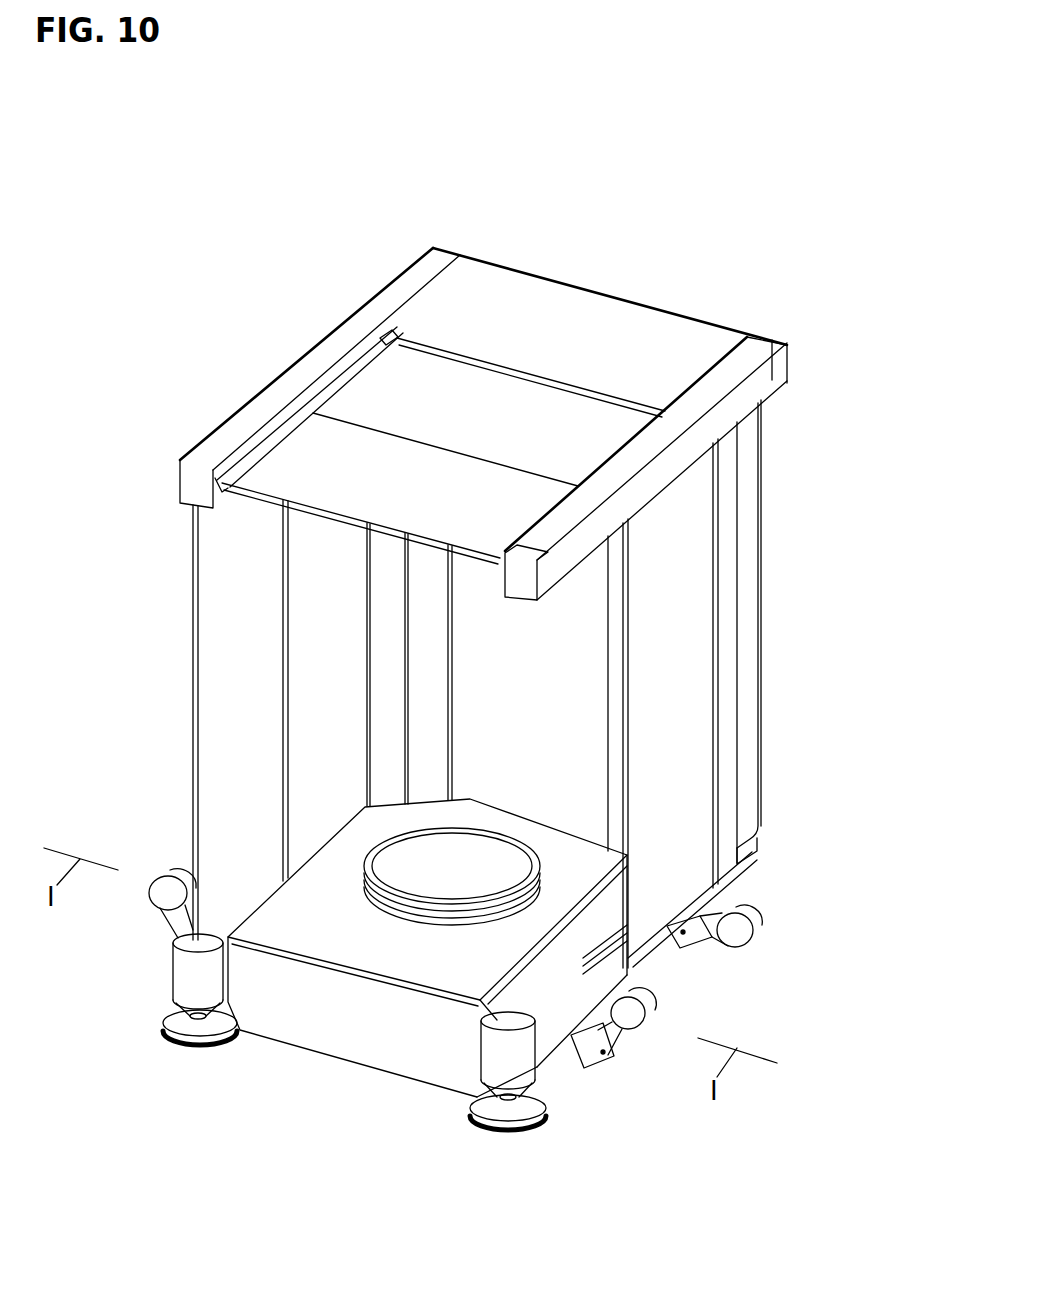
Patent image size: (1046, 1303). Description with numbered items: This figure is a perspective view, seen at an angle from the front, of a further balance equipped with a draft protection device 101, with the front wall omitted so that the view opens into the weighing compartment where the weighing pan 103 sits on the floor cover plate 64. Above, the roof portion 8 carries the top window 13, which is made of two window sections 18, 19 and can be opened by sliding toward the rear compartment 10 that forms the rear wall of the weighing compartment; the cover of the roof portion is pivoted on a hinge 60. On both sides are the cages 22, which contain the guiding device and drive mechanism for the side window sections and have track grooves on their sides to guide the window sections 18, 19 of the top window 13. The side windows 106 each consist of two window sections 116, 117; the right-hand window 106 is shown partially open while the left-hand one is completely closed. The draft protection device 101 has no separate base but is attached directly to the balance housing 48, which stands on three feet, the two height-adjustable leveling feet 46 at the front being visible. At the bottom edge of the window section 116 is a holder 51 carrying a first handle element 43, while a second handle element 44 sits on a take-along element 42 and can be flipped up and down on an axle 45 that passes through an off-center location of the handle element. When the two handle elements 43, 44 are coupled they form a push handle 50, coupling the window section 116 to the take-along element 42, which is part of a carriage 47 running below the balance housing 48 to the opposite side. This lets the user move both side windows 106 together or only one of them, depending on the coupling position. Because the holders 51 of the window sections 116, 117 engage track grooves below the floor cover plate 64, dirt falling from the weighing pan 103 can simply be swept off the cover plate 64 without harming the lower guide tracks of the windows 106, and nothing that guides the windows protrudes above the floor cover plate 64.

The draft protection device 101 is at (657, 281).
The cage 22 is at (432, 260).
The roof portion 8 is at (313, 325).
The hinge 60 is at (373, 331).
The window section 19 is at (495, 418).
The top window 13 is at (377, 418).
The window section 18 is at (420, 500).
The rear compartment 10 is at (765, 591).
The side window 106 is at (188, 664).
The window section 116 is at (261, 715).
The window section 117 is at (350, 686).
The floor cover plate 64 is at (342, 928).
The weighing pan 103 is at (476, 881).
The balance housing 48 is at (307, 1020).
The take-along element 42 is at (550, 1032).
The carriage 47 is at (549, 1080).
The leveling foot 46 is at (195, 993).
The push handle 50 is at (167, 890).
The second handle element 44 is at (631, 1033).
The axle 45 is at (604, 1054).
The first handle element 43 is at (748, 946).
The holder 51 is at (658, 946).